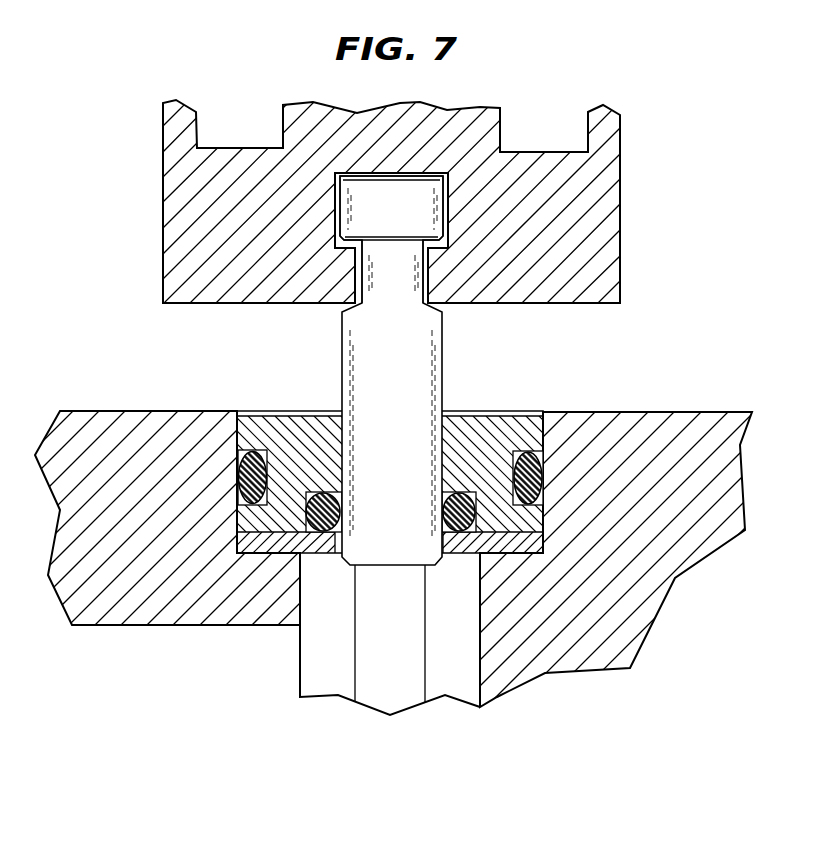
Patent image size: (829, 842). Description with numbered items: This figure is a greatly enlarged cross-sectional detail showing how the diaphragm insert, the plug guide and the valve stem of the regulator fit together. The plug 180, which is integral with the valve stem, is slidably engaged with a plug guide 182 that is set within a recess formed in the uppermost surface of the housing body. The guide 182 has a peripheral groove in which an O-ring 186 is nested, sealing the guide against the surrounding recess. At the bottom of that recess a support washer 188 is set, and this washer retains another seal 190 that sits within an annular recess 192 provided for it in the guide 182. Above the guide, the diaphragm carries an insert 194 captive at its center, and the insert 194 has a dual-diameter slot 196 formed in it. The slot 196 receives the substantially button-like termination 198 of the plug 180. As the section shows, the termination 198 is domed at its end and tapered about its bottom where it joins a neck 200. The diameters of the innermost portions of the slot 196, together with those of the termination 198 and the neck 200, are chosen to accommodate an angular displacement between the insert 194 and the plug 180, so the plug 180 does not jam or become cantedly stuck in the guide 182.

The plug 180 is at (424, 343).
The plug guide 182 is at (293, 433).
The O-ring 186 is at (243, 472).
The support washer 188 is at (274, 548).
The seal 190 is at (470, 510).
The annular recess 192 is at (343, 502).
The insert 194 is at (622, 207).
The dual-diameter slot 196 is at (444, 248).
The termination 198 is at (405, 186).
The neck 200 is at (410, 285).